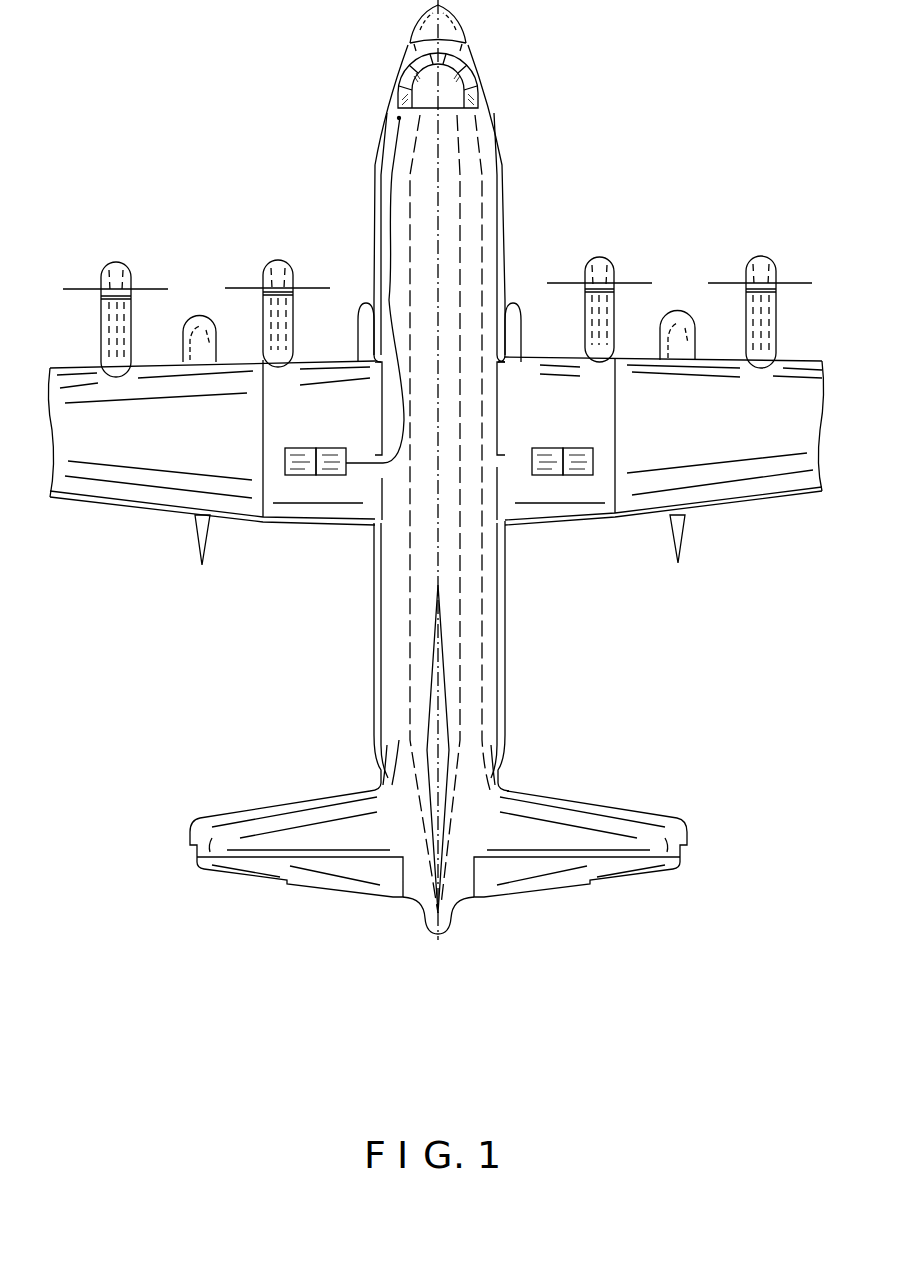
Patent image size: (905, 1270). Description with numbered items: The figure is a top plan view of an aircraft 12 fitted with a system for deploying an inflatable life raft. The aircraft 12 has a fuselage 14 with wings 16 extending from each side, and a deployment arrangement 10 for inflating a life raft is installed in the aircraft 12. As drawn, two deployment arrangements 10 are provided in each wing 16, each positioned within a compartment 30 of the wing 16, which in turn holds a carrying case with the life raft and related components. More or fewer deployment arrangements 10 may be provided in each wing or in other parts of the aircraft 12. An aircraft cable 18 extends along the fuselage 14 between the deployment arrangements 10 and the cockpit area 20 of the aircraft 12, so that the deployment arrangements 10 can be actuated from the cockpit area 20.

The deployment arrangement 10 is at (303, 448).
The aircraft 12 is at (505, 166).
The fuselage 14 is at (497, 248).
The wings 16 is at (143, 481).
The aircraft cable 18 is at (384, 208).
The cockpit area 20 is at (391, 101).
The compartment 30 is at (332, 448).